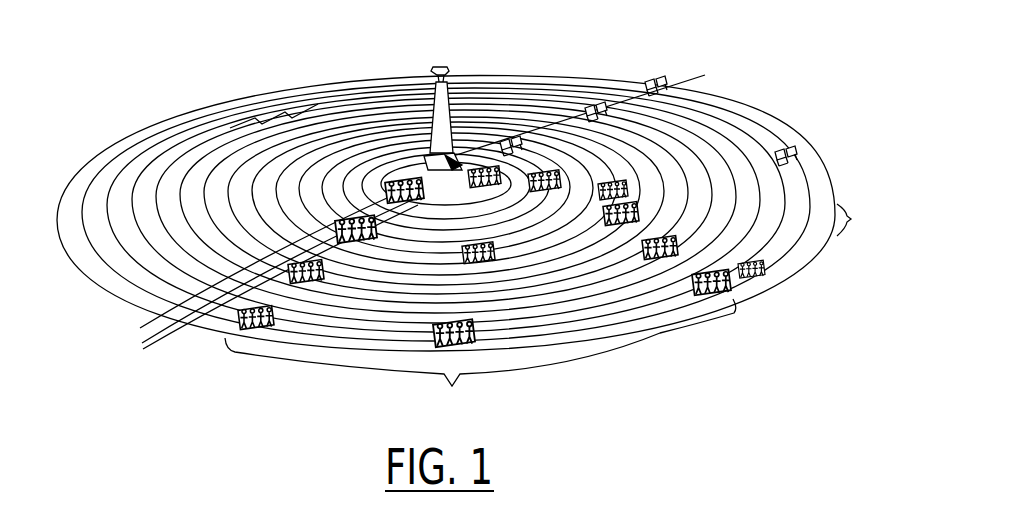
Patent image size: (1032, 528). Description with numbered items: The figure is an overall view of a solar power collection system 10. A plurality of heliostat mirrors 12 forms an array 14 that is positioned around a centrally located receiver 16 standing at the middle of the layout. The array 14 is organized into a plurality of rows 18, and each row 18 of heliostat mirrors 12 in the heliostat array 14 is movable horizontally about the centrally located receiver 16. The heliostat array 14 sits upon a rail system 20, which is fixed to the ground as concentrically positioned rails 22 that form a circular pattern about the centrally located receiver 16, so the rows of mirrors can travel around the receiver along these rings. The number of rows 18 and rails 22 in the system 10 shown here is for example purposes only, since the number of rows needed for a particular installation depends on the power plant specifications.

The solar power collection system 10 is at (730, 66).
The heliostat mirrors 12 is at (735, 128).
The array 14 is at (822, 128).
The centrally located receiver 16 is at (444, 64).
The rows 18 is at (269, 277).
The rail system 20 is at (238, 90).
The rails 22 is at (274, 118).